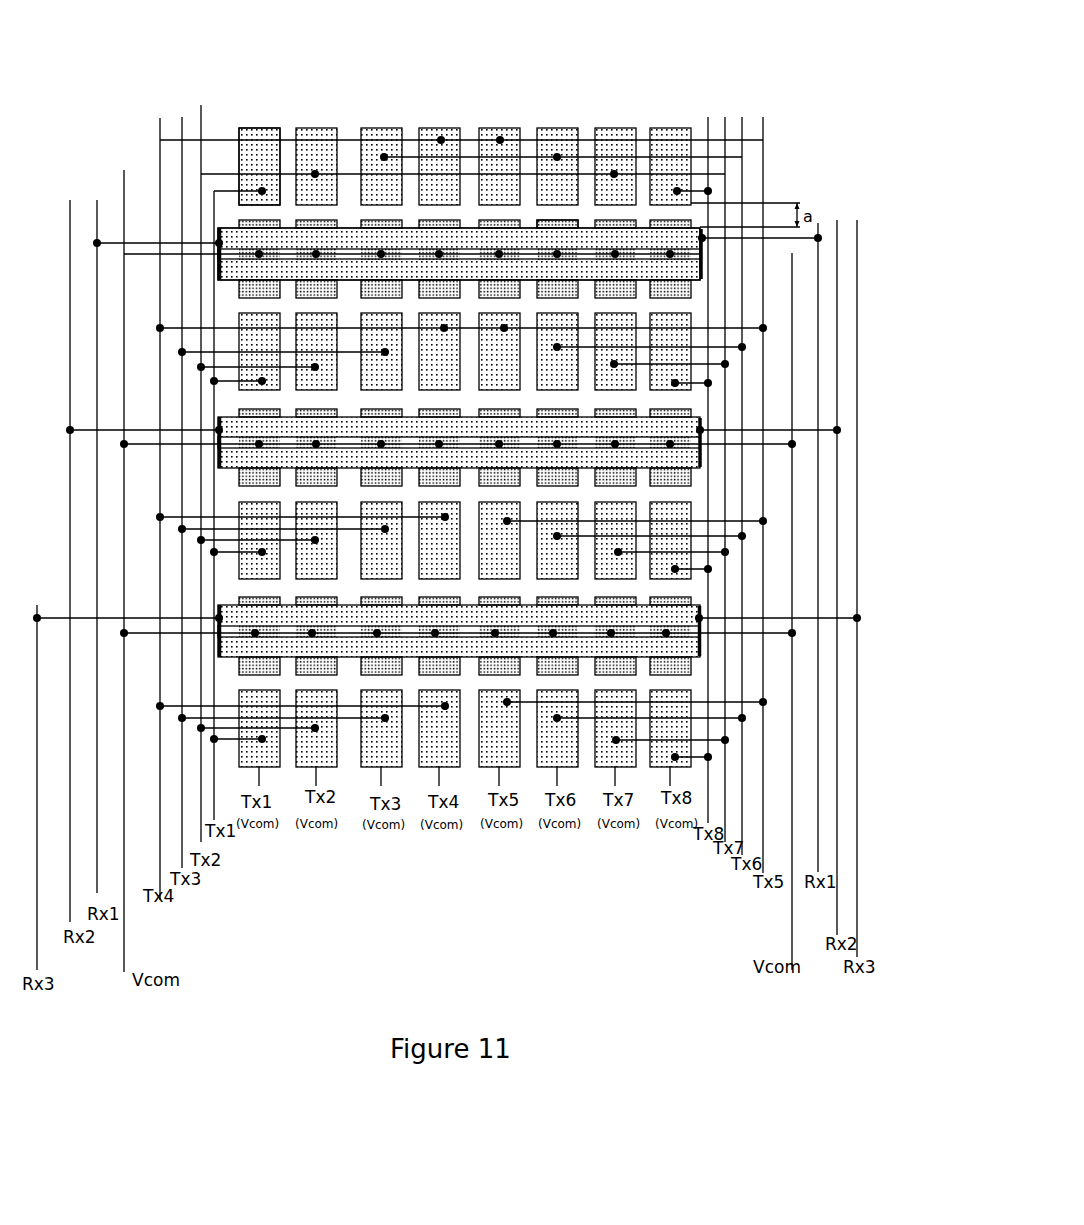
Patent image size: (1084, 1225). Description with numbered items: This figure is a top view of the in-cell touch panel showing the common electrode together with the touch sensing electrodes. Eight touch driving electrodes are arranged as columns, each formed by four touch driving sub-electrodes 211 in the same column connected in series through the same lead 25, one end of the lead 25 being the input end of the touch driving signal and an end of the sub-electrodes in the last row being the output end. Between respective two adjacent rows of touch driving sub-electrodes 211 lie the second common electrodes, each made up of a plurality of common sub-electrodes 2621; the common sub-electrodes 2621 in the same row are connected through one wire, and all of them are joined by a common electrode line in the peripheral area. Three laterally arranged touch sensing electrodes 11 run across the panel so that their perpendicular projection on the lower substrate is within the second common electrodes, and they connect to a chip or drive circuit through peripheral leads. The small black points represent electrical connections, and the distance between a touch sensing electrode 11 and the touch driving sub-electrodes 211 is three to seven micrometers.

The touch driving sub-electrode 211 is at (260, 143).
The common sub-electrode 2621 is at (560, 224).
The lead 25 is at (709, 137).
The touch sensing electrode 11 is at (700, 277).